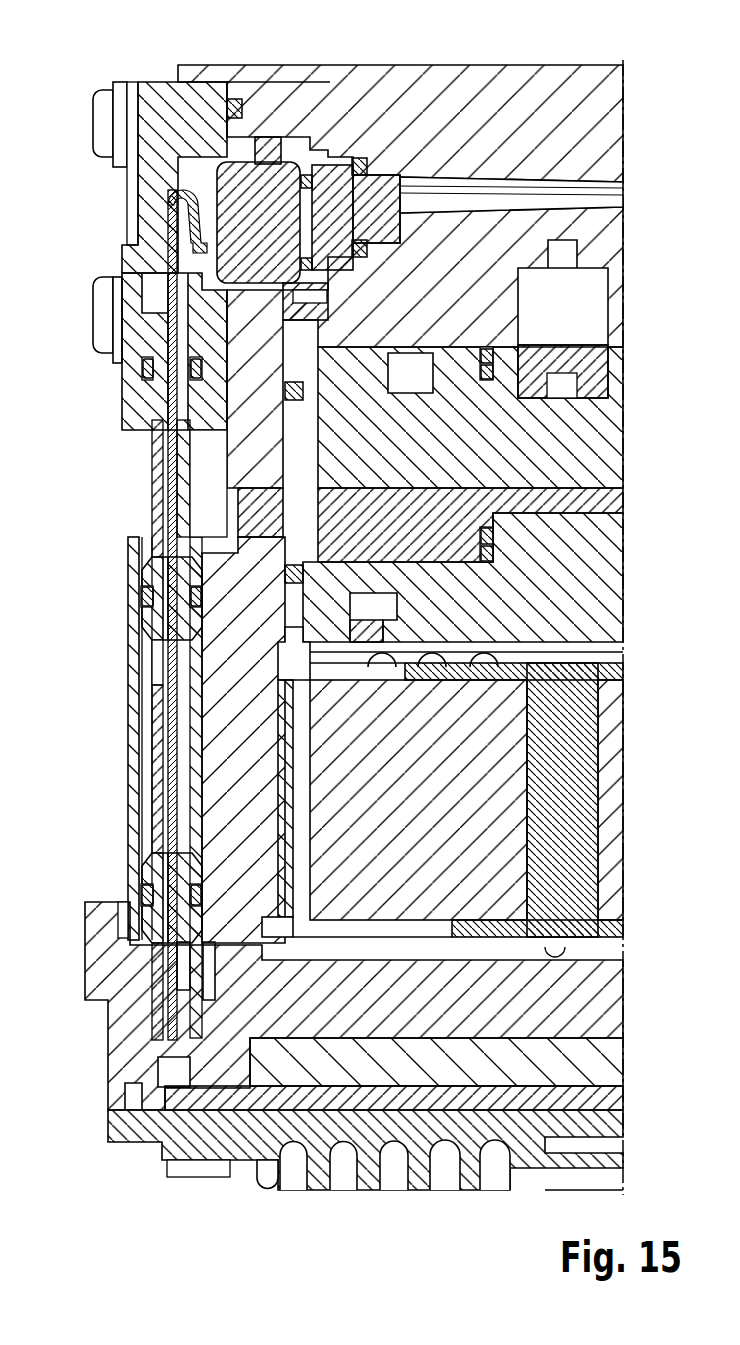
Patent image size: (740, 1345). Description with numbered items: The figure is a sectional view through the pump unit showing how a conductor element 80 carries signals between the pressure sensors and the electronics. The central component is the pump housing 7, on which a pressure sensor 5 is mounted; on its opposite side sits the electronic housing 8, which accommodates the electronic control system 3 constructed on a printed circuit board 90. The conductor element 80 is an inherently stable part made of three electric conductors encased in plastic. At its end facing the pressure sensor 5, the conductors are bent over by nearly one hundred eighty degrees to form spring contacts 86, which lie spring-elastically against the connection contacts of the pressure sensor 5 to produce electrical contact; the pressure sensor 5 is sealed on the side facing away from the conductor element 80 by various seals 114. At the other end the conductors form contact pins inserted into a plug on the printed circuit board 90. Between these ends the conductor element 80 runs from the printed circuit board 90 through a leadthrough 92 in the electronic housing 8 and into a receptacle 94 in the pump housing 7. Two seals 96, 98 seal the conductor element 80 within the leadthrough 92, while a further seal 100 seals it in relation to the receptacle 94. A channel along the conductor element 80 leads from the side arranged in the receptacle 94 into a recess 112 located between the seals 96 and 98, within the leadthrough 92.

The electronic control system 3 is at (592, 1058).
The pressure sensor 5 is at (272, 158).
The pump housing 7 is at (481, 80).
The electronic housing 8 is at (230, 788).
The conductor element 80 is at (155, 497).
The spring contact 86 is at (197, 190).
The printed circuit board 90 is at (593, 1102).
The leadthrough 92 is at (147, 737).
The receptacle 94 is at (155, 291).
The seal 96 is at (147, 903).
The seal 98 is at (147, 604).
The seal 100 is at (147, 368).
The recess 112 is at (157, 660).
The seals 114 is at (234, 98).